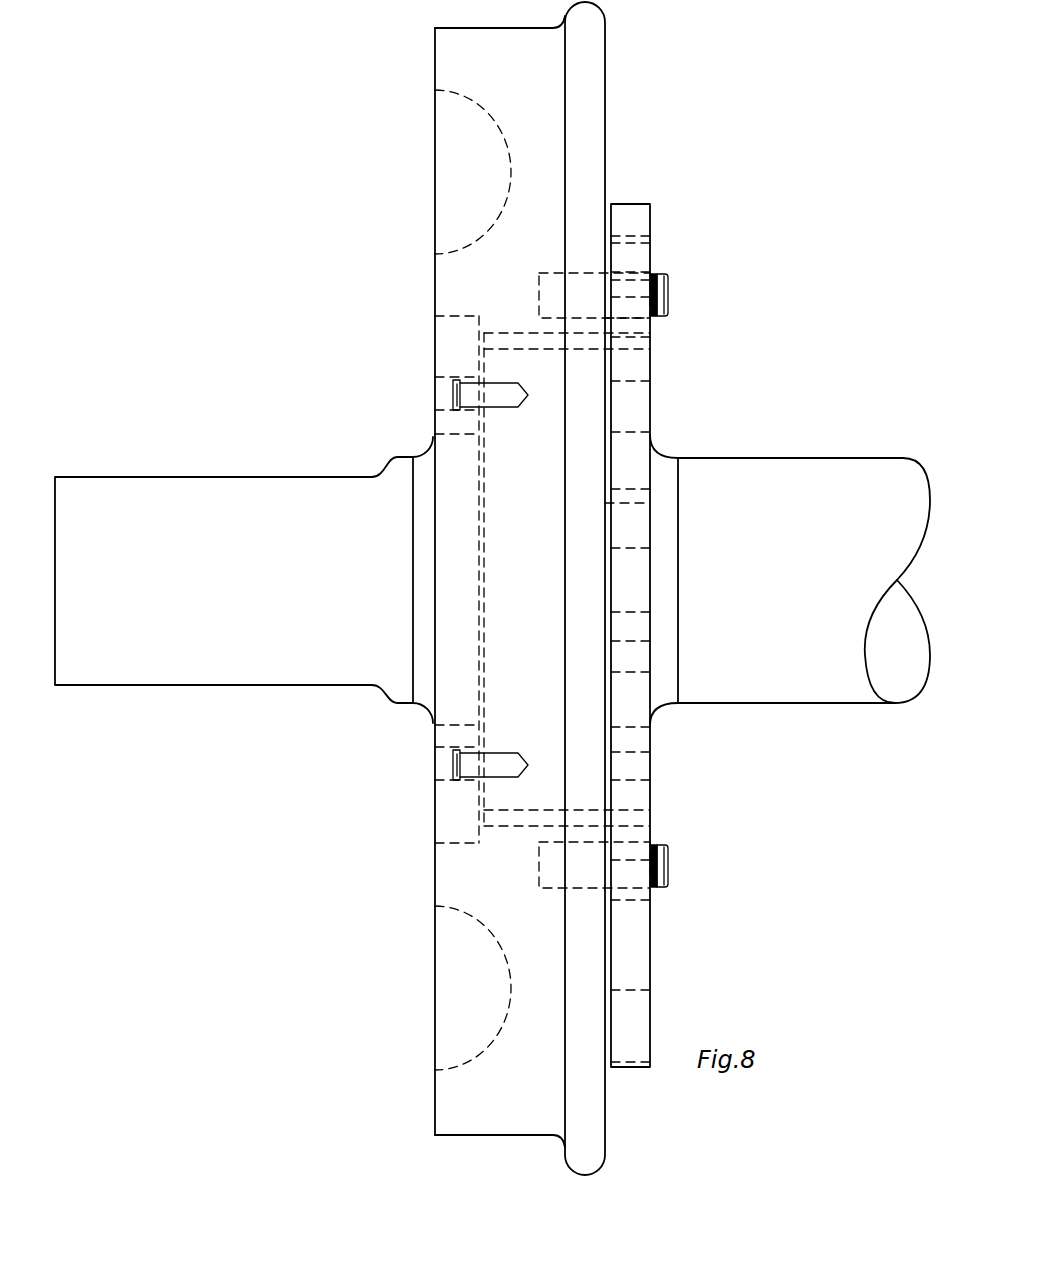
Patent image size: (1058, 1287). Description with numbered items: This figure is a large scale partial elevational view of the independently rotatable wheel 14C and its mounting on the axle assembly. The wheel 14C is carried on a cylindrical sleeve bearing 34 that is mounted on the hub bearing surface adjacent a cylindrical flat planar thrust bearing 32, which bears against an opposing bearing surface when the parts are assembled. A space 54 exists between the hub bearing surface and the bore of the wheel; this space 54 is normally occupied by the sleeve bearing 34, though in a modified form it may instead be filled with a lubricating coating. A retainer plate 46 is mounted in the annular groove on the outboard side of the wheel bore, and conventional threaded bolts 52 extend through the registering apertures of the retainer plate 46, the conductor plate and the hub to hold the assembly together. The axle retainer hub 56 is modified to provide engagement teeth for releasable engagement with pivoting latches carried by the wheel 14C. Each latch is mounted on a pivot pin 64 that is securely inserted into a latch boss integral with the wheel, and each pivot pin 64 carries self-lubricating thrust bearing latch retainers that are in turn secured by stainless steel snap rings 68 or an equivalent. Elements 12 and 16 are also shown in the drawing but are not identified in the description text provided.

The independently rotatable wheel 14C is at (600, 40).
The axle retainer hub 56 is at (650, 204).
The thrust bearing 32 is at (613, 403).
The space 54 is at (520, 333).
The sleeve bearing 34 is at (495, 333).
The threaded bolts 52 is at (470, 382).
The retainer plate 46 is at (480, 537).
The output shaft 12 is at (828, 465).
The shaft flange 16 is at (665, 708).
The snap rings 68 is at (663, 272).
The pivot pins 64 is at (670, 297).